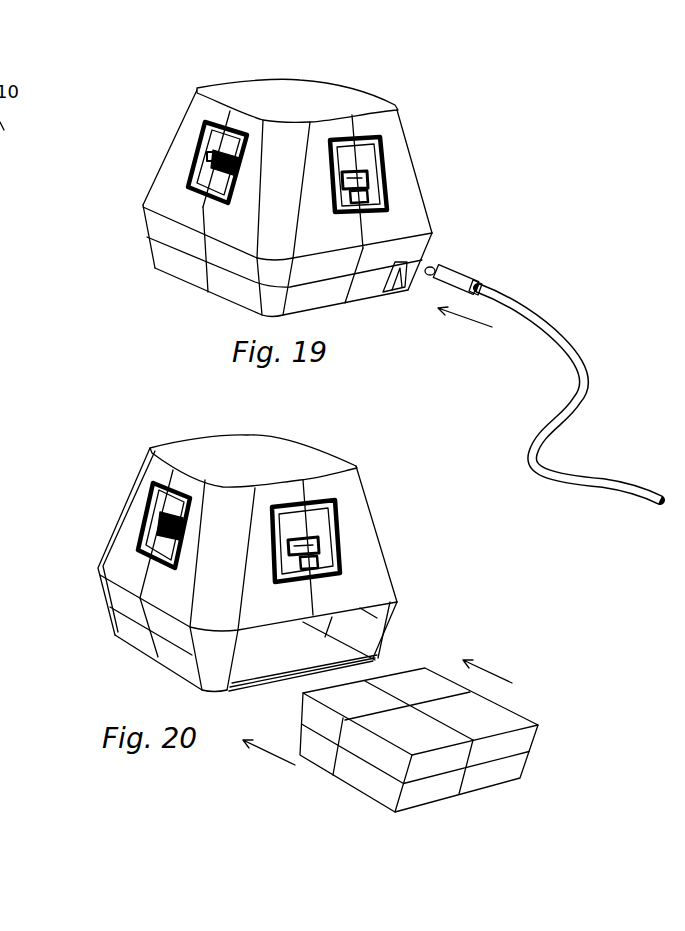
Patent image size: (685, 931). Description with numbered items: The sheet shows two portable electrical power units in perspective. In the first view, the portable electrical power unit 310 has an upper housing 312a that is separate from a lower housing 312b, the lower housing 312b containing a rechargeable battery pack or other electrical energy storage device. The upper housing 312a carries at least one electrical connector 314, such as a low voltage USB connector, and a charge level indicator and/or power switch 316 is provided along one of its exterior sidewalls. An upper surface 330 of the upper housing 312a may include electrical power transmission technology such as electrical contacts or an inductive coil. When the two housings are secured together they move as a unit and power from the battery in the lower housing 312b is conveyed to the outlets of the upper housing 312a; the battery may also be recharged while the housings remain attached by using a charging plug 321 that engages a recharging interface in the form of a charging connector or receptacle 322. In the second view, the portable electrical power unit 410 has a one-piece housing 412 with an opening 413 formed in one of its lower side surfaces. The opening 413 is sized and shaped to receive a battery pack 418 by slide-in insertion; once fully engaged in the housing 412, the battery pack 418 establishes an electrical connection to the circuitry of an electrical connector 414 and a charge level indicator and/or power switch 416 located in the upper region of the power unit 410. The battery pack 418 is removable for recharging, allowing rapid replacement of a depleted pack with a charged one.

In FIG. 19, the portable electrical power unit 310 is at (290, 193).
In FIG. 19, the upper housing 312a is at (180, 128).
In FIG. 19, the lower housing 312b is at (142, 222).
In FIG. 19, the electrical connector 314 is at (367, 167).
In FIG. 19, the charge level indicator and/or power switch 316 is at (207, 177).
In FIG. 19, the charging plug 321 is at (467, 272).
In FIG. 19, the charging connector or receptacle 322 is at (375, 284).
In FIG. 19, the upper surface 330 is at (299, 89).
In FIG. 20, the portable electrical power unit 410 is at (243, 547).
In FIG. 20, the one-piece housing 412 is at (387, 540).
In FIG. 20, the opening 413 is at (347, 640).
In FIG. 20, the electrical connector 414 is at (312, 523).
In FIG. 20, the charge level indicator and/or power switch 416 is at (155, 543).
In FIG. 20, the battery pack 418 is at (520, 712).